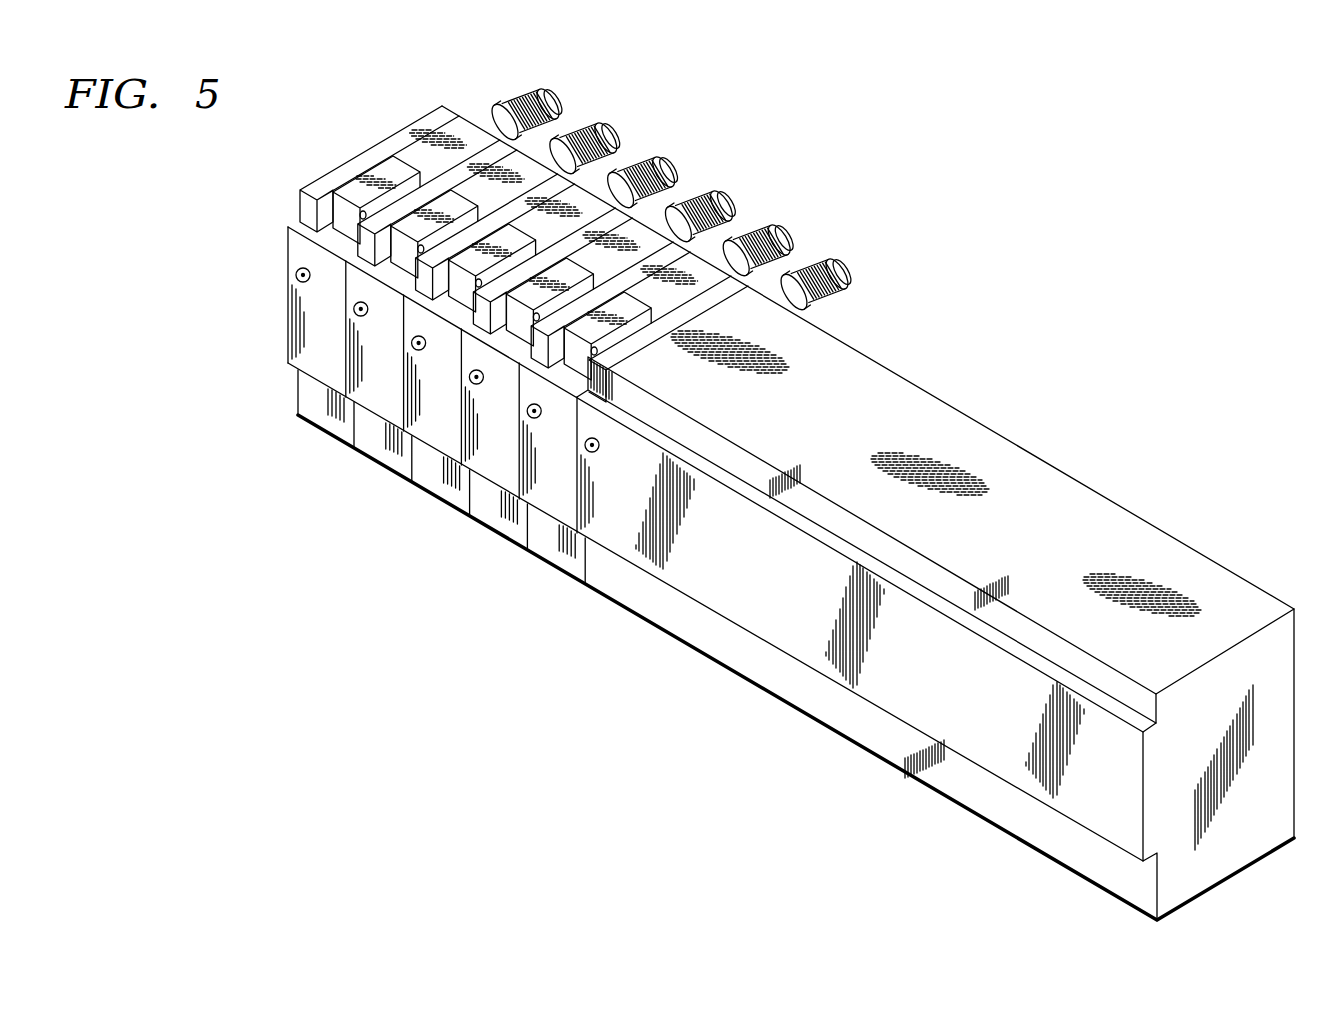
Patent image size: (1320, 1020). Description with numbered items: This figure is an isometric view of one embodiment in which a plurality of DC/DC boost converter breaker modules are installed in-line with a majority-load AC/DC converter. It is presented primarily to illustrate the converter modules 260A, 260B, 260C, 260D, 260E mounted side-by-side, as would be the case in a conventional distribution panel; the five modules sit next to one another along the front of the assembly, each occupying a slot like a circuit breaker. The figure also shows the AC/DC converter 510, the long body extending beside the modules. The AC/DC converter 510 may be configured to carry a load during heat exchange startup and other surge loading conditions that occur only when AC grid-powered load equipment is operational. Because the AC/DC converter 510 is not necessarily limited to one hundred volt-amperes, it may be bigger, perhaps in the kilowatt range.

The converter module 260A is at (296, 400).
The converter module 260B is at (375, 461).
The converter module 260C is at (437, 497).
The converter module 260D is at (500, 534).
The converter module 260E is at (560, 570).
The AC/DC converter 510 is at (815, 719).